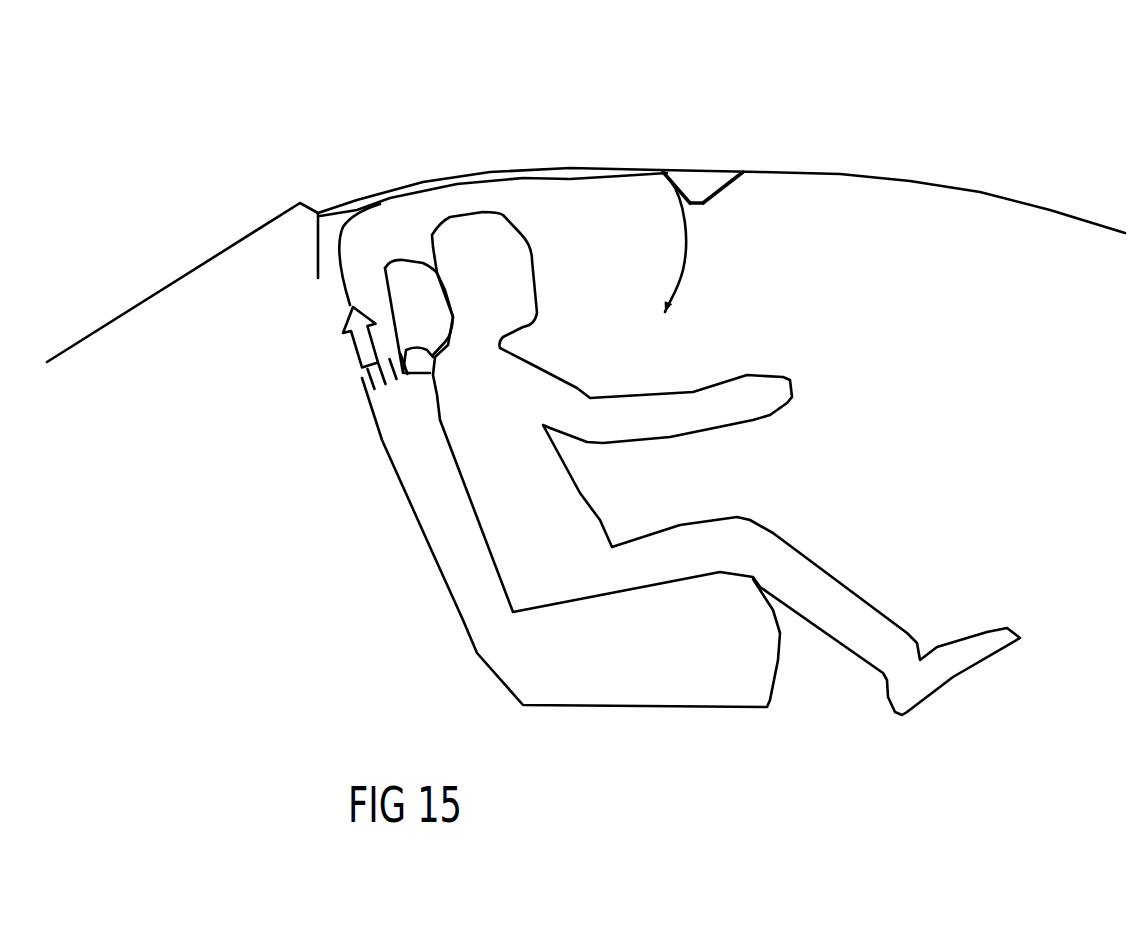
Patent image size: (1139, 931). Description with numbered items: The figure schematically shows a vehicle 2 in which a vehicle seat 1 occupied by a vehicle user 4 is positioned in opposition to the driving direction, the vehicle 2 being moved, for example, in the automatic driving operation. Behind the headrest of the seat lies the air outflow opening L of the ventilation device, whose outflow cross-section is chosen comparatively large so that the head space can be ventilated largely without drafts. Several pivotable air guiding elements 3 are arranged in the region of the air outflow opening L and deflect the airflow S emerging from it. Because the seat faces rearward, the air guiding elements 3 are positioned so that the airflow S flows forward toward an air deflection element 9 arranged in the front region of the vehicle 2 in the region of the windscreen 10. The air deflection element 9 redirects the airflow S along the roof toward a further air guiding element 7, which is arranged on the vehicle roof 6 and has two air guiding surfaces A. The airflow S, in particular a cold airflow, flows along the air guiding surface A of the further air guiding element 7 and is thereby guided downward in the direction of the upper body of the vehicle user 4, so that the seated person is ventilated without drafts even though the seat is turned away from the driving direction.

The vehicle seat 1 is at (508, 655).
The vehicle 2 is at (701, 190).
The air guiding elements 3 is at (363, 385).
The vehicle user 4 is at (570, 507).
The vehicle roof 6 is at (815, 172).
The further air guiding element 7 is at (701, 196).
The air deflection element 9 is at (313, 250).
The windscreen 10 is at (137, 302).
The airflow S is at (573, 170).
The air outflow opening L is at (363, 368).
The air guiding surfaces A is at (668, 183).